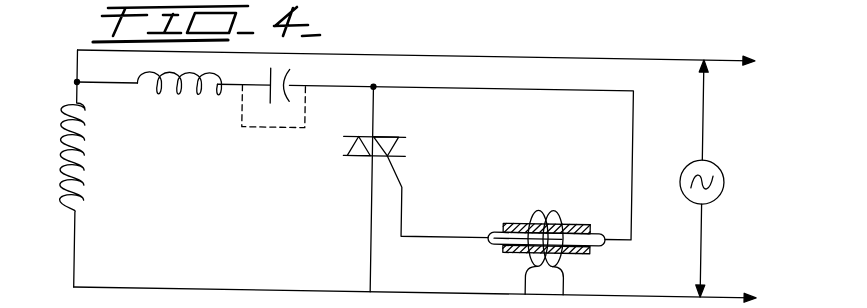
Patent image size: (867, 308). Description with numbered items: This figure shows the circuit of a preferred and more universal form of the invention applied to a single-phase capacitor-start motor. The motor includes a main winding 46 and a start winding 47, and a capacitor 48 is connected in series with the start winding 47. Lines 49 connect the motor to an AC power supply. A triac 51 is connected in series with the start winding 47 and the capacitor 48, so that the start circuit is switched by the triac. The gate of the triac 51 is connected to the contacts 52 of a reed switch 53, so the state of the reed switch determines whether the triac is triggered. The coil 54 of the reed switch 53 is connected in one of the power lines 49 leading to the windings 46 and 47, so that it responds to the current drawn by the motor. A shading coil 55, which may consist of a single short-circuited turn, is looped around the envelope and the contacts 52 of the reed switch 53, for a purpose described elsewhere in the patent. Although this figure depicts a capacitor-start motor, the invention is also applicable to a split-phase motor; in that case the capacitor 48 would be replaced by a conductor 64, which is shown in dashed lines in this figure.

The main winding 46 is at (63, 143).
The start winding 47 is at (181, 92).
The capacitor 48 is at (290, 77).
The lines 49 is at (720, 52).
The triac 51 is at (358, 161).
The contacts 52 is at (541, 202).
The reed switch 53 is at (518, 200).
The coil 54 is at (568, 252).
The shading coil 55 is at (515, 248).
The conductor 64 is at (243, 124).